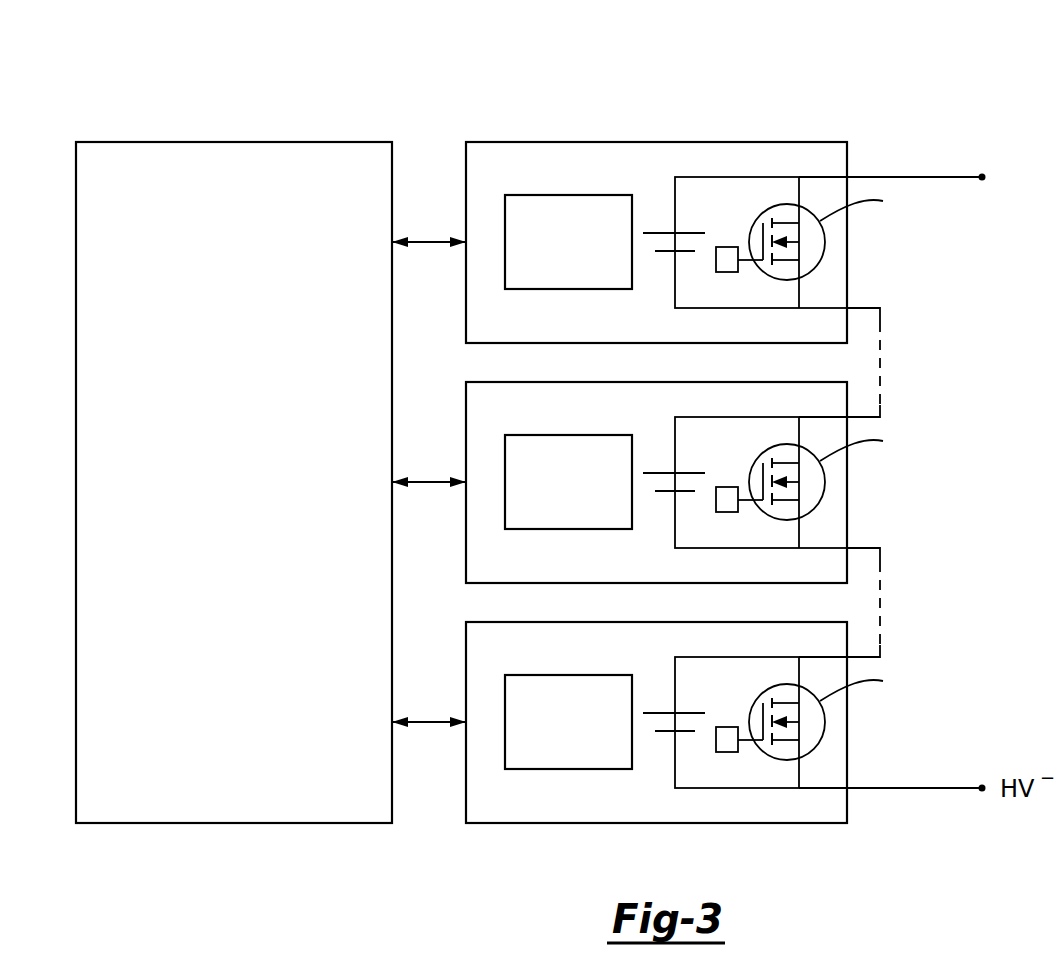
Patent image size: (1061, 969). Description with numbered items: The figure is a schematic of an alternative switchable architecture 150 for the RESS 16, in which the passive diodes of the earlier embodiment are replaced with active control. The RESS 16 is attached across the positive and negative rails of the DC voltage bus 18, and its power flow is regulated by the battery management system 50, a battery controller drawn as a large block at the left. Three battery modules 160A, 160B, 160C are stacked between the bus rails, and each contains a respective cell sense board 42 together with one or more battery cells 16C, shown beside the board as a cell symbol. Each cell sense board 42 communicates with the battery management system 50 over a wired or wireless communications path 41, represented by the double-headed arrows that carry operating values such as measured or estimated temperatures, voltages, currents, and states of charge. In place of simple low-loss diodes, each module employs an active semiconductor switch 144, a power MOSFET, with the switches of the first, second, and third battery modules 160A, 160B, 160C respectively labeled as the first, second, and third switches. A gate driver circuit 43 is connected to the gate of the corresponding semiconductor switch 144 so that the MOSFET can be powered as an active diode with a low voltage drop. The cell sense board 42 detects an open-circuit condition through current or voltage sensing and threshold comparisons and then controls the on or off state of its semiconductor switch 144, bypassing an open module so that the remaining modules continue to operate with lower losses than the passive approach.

The RESS 16 is at (305, 72).
The battery management system 50 is at (244, 531).
The switchable architecture 150 is at (728, 102).
The battery module 160A is at (848, 243).
The battery module 160B is at (848, 483).
The battery module 160C is at (848, 723).
The DC voltage bus 18 is at (908, 177).
The communications paths 41 is at (430, 249).
The cell sense board 42 is at (567, 195).
The battery cells 16C is at (654, 200).
The active semiconductor switch 144 is at (748, 205).
The gate driver circuit 43 is at (727, 272).